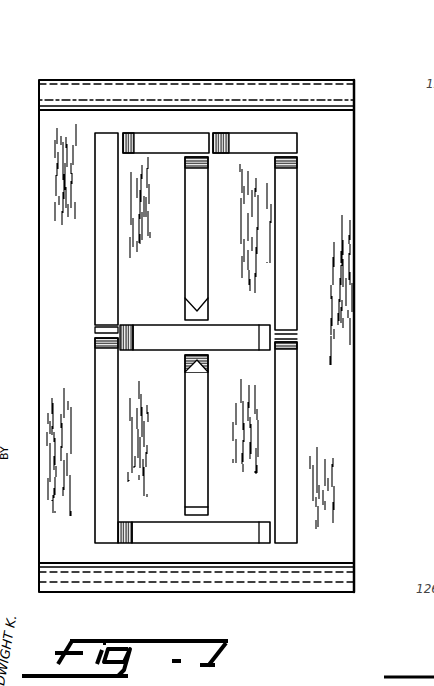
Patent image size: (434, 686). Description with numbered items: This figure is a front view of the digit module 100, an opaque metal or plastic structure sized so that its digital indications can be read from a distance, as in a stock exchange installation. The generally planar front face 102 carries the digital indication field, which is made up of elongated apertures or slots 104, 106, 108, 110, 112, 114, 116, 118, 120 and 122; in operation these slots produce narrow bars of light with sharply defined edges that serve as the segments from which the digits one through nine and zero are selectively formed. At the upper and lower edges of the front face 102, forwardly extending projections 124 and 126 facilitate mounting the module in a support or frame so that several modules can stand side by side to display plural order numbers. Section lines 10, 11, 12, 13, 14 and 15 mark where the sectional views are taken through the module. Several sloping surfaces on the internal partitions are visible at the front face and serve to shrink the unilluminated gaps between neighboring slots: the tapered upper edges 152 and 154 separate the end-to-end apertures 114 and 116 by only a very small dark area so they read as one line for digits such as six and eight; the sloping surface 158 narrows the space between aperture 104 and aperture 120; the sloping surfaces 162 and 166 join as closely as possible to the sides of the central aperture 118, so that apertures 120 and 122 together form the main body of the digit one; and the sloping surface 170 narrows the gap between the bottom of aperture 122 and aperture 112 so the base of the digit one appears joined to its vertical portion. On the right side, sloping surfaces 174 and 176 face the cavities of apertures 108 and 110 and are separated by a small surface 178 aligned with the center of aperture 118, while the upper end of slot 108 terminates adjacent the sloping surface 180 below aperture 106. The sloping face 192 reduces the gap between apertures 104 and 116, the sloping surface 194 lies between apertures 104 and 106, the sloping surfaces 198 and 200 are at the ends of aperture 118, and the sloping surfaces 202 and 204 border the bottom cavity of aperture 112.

The digit module 100 is at (223, 331).
The front face 102 is at (355, 210).
The elongated aperture 104 is at (154, 136).
The elongated aperture 106 is at (255, 136).
The elongated aperture 108 is at (302, 242).
The elongated aperture 110 is at (301, 442).
The elongated aperture 112 is at (200, 534).
The elongated aperture 114 is at (89, 440).
The elongated aperture 116 is at (97, 256).
The elongated aperture 118 is at (195, 327).
The elongated aperture 120 is at (195, 238).
The elongated aperture 122 is at (192, 435).
The forwardly extending projection 124 is at (353, 94).
The forwardly extending projection 126 is at (352, 580).
The upper edge of partition 152 is at (94, 330).
The upper edge of partition 154 is at (93, 348).
The sloping surface 158 is at (184, 163).
The sloping surface 162 is at (202, 308).
The sloping surface 166 is at (208, 362).
The sloping surface 170 is at (208, 512).
The sloping surface 174 is at (297, 334).
The sloping surface 176 is at (297, 346).
The small surface 178 is at (297, 339).
The sloping surface 180 is at (297, 162).
The sloping face 192 is at (117, 136).
The sloping surface 194 is at (226, 137).
The sloping surface 198 is at (126, 323).
The sloping surface 200 is at (262, 330).
The sloping surface 202 is at (136, 528).
The sloping surface 204 is at (259, 543).
The section line 10 is at (88, 62).
The section line 11 is at (178, 62).
The section line 12 is at (267, 62).
The section line 13 is at (47, 143).
The section line 14 is at (26, 318).
The section line 15 is at (47, 535).